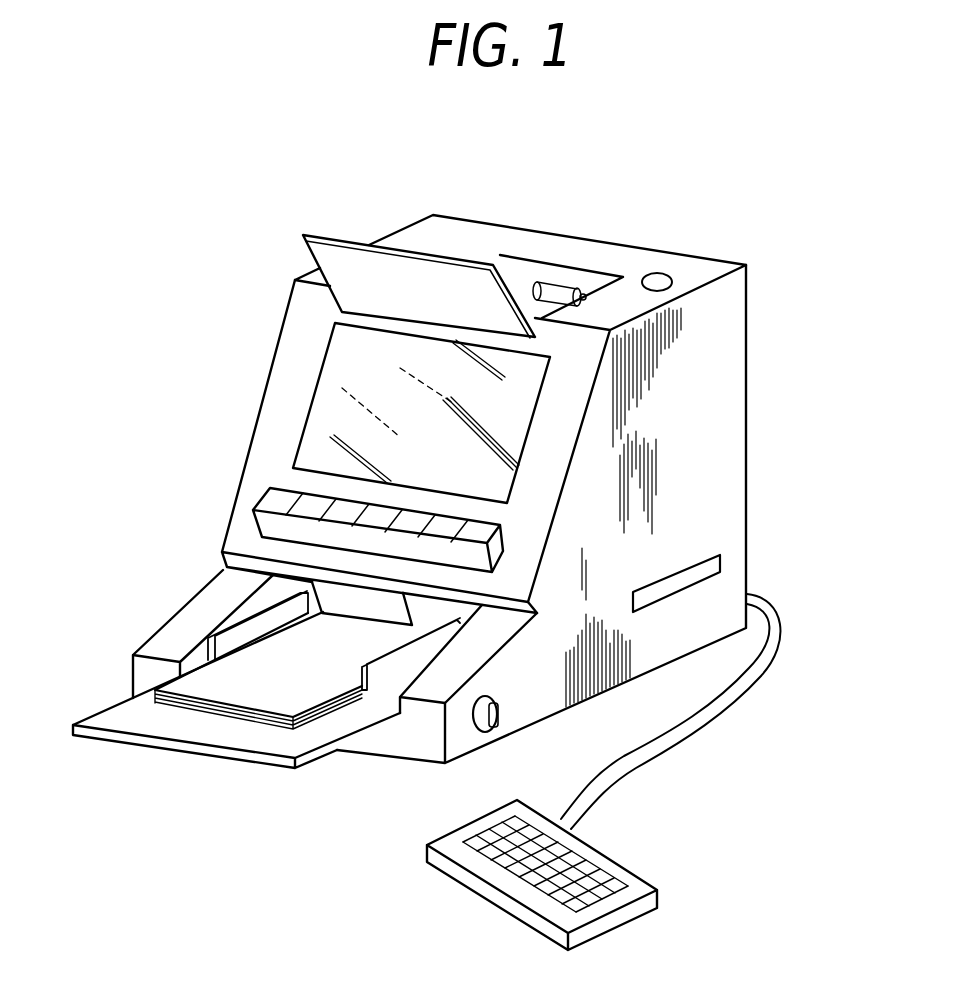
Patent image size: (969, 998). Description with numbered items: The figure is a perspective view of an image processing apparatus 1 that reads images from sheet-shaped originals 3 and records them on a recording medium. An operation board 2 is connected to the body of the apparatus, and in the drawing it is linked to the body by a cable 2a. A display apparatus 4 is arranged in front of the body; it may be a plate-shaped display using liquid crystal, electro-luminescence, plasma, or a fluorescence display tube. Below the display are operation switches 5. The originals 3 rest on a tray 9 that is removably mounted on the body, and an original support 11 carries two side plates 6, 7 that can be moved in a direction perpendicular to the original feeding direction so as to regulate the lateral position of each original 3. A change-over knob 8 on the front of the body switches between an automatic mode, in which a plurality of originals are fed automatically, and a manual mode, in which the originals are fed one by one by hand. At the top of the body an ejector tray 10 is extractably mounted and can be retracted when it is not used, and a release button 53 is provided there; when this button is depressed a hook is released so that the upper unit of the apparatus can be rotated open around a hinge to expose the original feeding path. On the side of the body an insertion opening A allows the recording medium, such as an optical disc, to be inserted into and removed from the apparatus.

The image processing apparatus 1 is at (733, 347).
The operation board 2 is at (623, 915).
The keyboard cable 2a is at (705, 722).
The sheet-shaped originals 3 is at (187, 687).
The display apparatus 4 is at (327, 393).
The operation switches 5 is at (260, 498).
The side plate 6 is at (233, 640).
The side plate 7 is at (377, 678).
The change-over knob 8 is at (500, 713).
The tray 9 is at (210, 733).
The ejector tray 10 is at (344, 262).
The original support 11 is at (388, 698).
The release button 53 is at (663, 277).
The insertion opening A is at (690, 572).